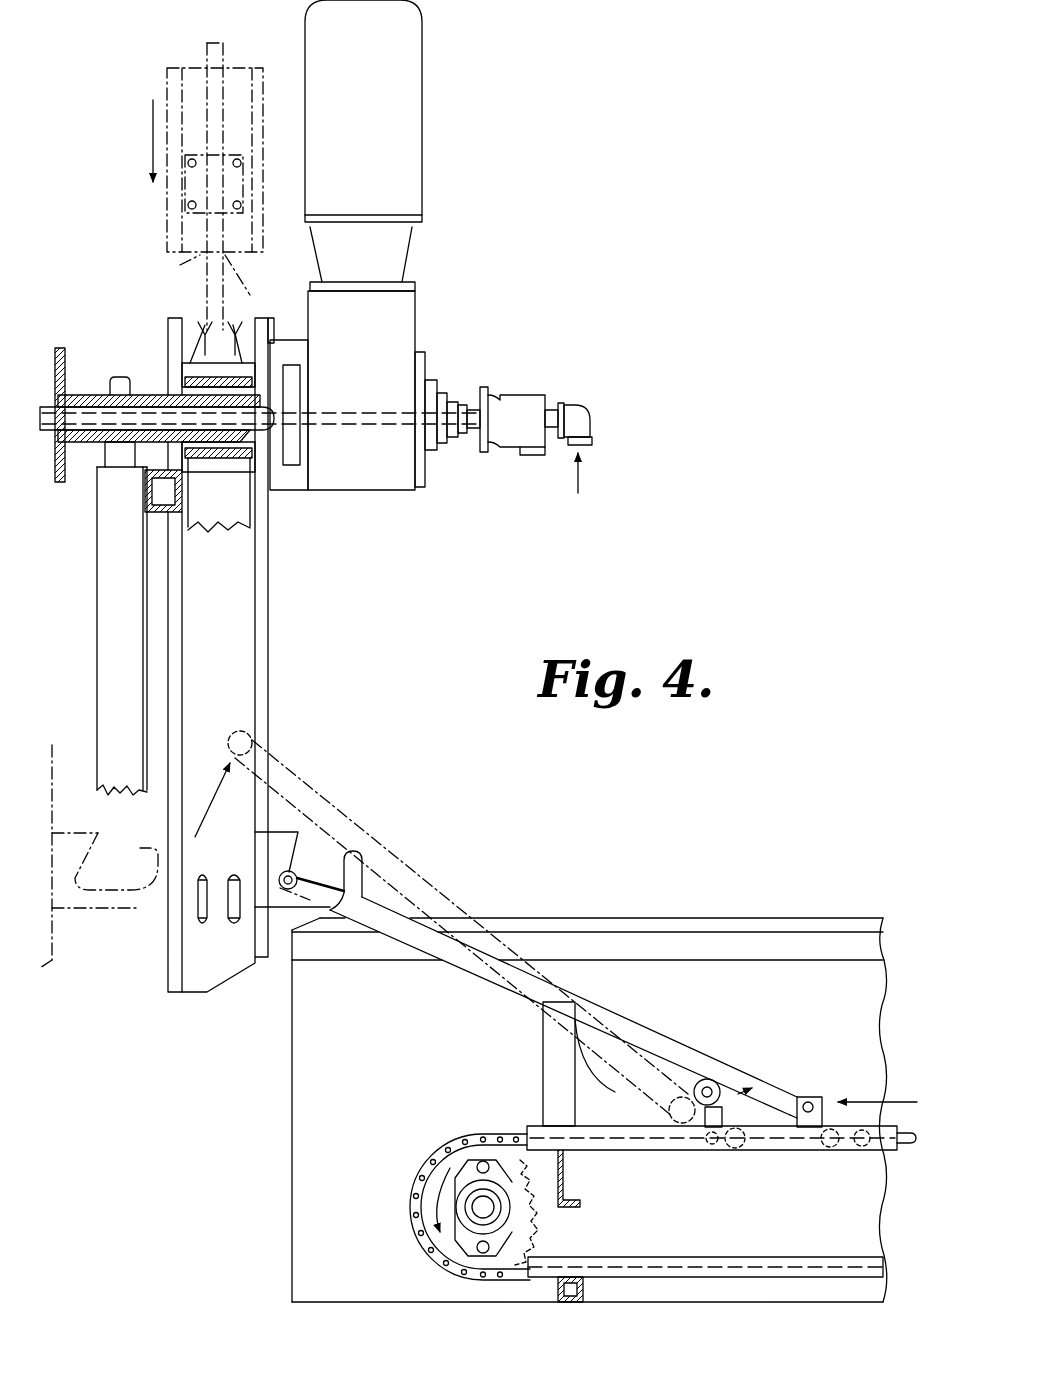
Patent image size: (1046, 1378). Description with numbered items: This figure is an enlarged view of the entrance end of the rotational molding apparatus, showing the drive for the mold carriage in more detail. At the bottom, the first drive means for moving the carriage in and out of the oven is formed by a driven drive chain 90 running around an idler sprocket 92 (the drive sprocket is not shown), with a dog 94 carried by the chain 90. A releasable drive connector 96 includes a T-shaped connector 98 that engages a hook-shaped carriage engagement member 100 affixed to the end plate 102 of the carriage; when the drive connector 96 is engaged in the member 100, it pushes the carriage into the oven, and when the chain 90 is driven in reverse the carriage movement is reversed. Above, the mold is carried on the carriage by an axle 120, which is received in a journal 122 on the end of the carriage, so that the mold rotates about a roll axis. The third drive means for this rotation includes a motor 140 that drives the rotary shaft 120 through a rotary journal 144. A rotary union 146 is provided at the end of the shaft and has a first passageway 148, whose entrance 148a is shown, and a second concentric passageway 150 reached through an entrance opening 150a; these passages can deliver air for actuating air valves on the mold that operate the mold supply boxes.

The drive chain 90 is at (410, 1205).
The idler sprocket 92 is at (445, 1240).
The dog 94 is at (787, 1137).
The releasable drive connector 96 is at (460, 950).
The T-shaped connector 98 is at (293, 867).
The hook-shaped carriage engagement member 100 is at (352, 860).
The end plate 102 is at (260, 697).
The axle 120 is at (145, 398).
The journal 122 is at (98, 452).
The motor 140 is at (418, 298).
The rotary journal 144 is at (425, 358).
The rotary union 146 is at (527, 415).
The first passageway 148 is at (553, 397).
The entrance 148a is at (588, 440).
The second concentric passageway 150 is at (463, 432).
The entrance opening 150a is at (535, 455).